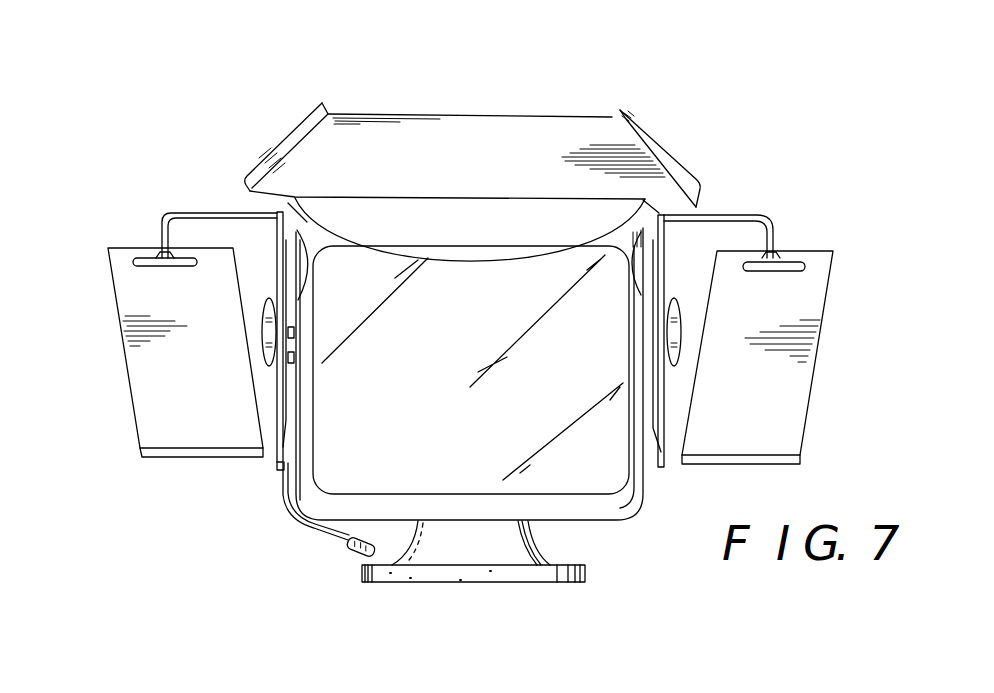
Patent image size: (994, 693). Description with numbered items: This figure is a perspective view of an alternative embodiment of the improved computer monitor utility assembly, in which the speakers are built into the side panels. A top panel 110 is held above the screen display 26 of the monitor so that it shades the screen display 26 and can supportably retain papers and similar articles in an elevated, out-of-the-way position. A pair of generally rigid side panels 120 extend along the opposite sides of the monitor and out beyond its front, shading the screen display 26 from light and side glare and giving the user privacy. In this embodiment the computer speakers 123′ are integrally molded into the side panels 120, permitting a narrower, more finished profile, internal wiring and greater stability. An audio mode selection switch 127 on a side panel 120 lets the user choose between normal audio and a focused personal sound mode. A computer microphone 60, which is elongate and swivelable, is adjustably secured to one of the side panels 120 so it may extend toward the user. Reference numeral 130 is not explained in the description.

The top panel 110 is at (483, 132).
The screen display 26 is at (598, 510).
The side panels 120 is at (277, 243).
The side flap / shade panel 130 is at (134, 219).
The computer speakers 123′ is at (262, 343).
The audio mode selection switch 127 is at (289, 372).
The computer microphone 60 is at (312, 528).